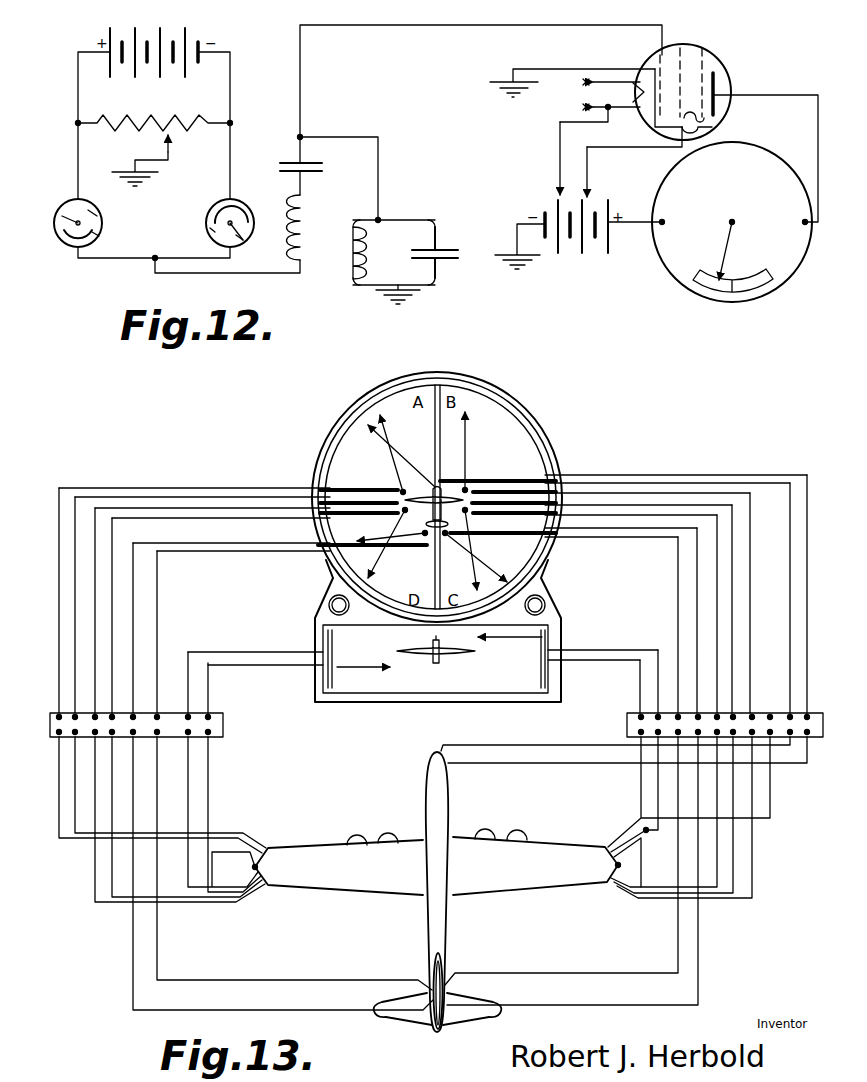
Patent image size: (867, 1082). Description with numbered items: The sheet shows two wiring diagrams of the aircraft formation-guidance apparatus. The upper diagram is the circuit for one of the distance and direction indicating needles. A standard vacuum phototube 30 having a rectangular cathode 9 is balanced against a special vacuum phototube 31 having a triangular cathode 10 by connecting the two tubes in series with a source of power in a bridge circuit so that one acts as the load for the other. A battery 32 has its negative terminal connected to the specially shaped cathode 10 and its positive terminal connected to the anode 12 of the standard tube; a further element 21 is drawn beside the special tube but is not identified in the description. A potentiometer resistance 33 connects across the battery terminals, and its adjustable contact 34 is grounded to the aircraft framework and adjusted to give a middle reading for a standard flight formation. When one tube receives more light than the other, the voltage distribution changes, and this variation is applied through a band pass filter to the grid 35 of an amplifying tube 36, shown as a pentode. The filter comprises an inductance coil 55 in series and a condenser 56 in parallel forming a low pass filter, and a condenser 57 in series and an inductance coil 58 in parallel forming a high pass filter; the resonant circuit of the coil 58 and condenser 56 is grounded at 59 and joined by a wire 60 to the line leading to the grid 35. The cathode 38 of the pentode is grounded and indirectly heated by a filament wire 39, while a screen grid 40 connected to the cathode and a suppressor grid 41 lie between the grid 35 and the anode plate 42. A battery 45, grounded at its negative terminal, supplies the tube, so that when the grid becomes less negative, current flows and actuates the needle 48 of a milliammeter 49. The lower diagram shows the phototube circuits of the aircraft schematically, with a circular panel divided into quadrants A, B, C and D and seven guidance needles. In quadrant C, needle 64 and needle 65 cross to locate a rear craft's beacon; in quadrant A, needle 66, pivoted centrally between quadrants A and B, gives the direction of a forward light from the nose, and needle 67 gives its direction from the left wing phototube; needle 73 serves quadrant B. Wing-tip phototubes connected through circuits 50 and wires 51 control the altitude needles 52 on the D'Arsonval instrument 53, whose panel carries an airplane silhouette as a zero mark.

In FIG. 12, the rectangular cathode 9 is at (100, 236).
In FIG. 12, the triangular cathode 10 is at (238, 208).
In FIG. 12, the anode 12 is at (60, 208).
In FIG. 12, the pointer 21 is at (243, 241).
In FIG. 12, the standard vacuum phototube 30 is at (98, 216).
In FIG. 12, the special vacuum phototube 31 is at (210, 230).
In FIG. 12, the battery 32 is at (165, 72).
In FIG. 12, the potentiometer resistance 33 is at (190, 118).
In FIG. 12, the adjustable contact 34 is at (172, 150).
In FIG. 12, the grid 35 is at (658, 60).
In FIG. 12, the amplifying tube 36 is at (700, 54).
In FIG. 12, the cathode 38 is at (660, 118).
In FIG. 12, the filament wire 39 is at (636, 96).
In FIG. 12, the screen grid 40 is at (703, 117).
In FIG. 12, the suppressor grid 41 is at (700, 130).
In FIG. 12, the anode plate 42 is at (725, 92).
In FIG. 12, the battery 45 is at (580, 250).
In FIG. 12, the needle 48 is at (727, 245).
In FIG. 12, the milliammeter 49 is at (732, 222).
In FIG. 13, the circuit 50 is at (630, 840).
In FIG. 13, the wires 51 is at (624, 875).
In FIG. 13, the needle 52 is at (376, 666).
In FIG. 13, the instrument 53 is at (436, 659).
In FIG. 12, the inductance coil 55 is at (305, 205).
In FIG. 12, the condenser 56 is at (445, 254).
In FIG. 12, the condenser 57 is at (286, 163).
In FIG. 12, the inductance coil 58 is at (370, 245).
In FIG. 12, the ground 59 is at (414, 296).
In FIG. 12, the wire 60 is at (378, 139).
In FIG. 13, the needle 64 is at (485, 572).
In FIG. 13, the needle 65 is at (473, 574).
In FIG. 13, the needle 66 is at (430, 474).
In FIG. 13, the needle 67 is at (398, 488).
In FIG. 13, the needle 73 is at (467, 466).